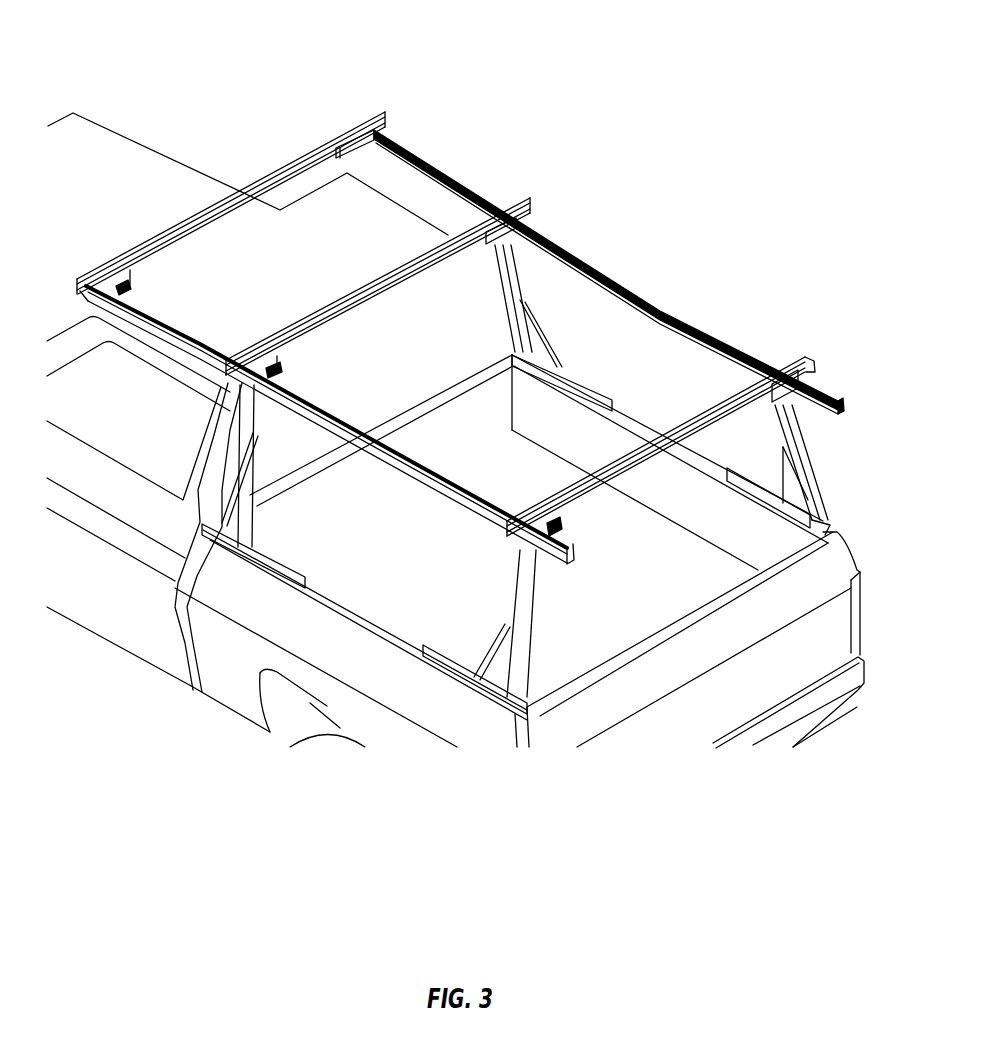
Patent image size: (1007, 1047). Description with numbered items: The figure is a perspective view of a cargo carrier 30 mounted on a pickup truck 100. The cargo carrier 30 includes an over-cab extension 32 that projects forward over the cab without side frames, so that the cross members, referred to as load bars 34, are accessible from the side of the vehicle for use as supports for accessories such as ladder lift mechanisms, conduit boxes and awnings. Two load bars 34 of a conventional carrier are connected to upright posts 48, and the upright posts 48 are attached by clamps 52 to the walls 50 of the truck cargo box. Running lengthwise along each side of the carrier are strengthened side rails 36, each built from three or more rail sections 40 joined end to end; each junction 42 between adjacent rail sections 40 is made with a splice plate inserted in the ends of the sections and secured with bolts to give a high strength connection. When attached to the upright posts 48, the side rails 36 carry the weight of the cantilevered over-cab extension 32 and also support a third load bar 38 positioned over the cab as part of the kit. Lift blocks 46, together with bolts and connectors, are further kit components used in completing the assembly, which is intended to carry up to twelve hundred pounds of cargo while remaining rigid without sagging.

The pickup truck 100 is at (162, 63).
The cargo carrier 30 is at (452, 138).
The over-cab extension 32 is at (308, 125).
The load bars 34 is at (522, 197).
The side rails 36 is at (640, 311).
The third load bar 38 is at (376, 112).
The rail sections 40 is at (493, 531).
The junction 42 is at (445, 493).
The lift blocks 46 is at (791, 394).
The upright posts 48 is at (811, 470).
The walls 50 is at (629, 432).
The clamps 52 is at (744, 470).